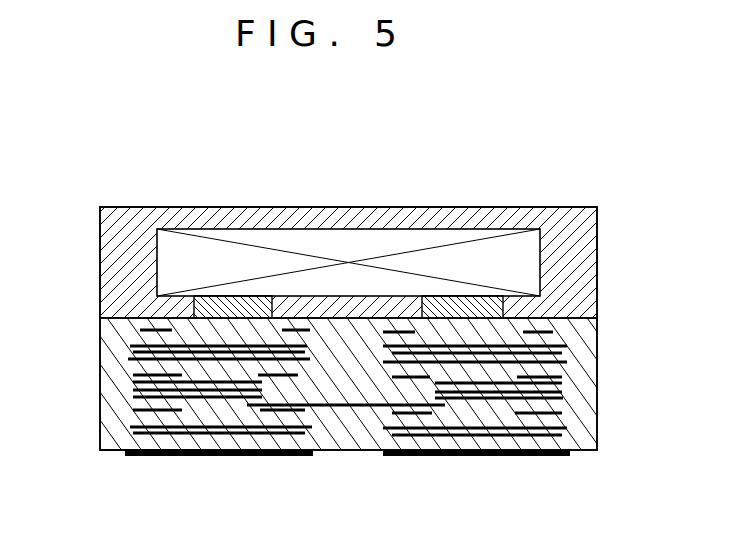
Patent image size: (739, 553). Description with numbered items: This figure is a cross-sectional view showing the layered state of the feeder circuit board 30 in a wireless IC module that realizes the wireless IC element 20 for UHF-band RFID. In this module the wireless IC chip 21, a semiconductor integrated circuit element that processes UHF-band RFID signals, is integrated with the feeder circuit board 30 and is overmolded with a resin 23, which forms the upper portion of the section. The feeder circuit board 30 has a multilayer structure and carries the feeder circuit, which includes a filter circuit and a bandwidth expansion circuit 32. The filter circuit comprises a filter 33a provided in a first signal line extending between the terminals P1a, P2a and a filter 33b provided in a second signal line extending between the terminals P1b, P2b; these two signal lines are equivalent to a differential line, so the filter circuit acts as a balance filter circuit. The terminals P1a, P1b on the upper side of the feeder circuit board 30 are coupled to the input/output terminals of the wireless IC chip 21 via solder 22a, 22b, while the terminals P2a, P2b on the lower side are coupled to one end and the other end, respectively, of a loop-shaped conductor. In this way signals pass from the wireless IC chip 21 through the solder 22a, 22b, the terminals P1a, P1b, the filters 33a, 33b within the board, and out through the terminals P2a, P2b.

The wireless IC element 20 is at (168, 146).
The wireless IC chip 21 is at (360, 240).
The solder 22a is at (257, 296).
The solder 22b is at (440, 297).
The resin 23 is at (540, 217).
The feeder circuit board 30 is at (632, 320).
The bandwidth expansion circuit 32 is at (165, 455).
The filter 33a is at (118, 356).
The filter 33b is at (577, 366).
The terminal P1a is at (228, 274).
The terminal P1b is at (472, 274).
The terminal P2a is at (252, 457).
The terminal P2b is at (467, 457).